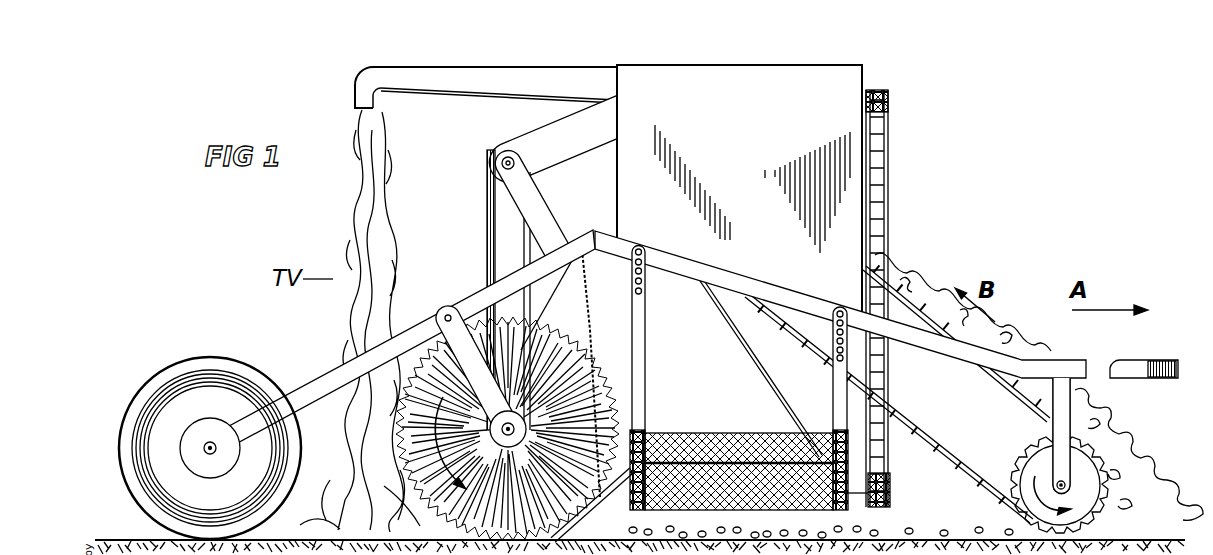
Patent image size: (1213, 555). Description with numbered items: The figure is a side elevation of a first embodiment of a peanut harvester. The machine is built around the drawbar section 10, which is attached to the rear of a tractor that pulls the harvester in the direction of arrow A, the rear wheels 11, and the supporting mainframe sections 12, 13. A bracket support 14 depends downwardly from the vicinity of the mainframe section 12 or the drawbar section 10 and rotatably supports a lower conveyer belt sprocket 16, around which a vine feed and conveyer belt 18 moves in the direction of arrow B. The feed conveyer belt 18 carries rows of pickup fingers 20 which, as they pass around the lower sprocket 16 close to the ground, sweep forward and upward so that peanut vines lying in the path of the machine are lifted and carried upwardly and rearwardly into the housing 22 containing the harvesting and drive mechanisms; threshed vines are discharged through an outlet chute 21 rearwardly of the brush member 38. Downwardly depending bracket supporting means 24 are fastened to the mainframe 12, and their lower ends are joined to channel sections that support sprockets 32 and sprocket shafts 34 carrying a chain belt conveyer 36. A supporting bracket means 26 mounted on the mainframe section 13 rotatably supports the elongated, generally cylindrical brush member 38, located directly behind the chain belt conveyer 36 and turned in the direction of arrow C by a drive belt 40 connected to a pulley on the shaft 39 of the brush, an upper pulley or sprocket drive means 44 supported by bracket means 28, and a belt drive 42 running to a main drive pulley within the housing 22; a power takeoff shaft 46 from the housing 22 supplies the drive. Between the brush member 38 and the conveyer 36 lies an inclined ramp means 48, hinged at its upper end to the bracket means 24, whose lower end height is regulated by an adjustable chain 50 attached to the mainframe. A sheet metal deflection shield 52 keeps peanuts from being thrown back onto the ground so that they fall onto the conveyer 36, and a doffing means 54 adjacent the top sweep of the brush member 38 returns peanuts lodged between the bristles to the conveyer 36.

The drawbar section 10 is at (1125, 360).
The rear wheels 11 is at (208, 357).
The supporting mainframe section 12 is at (928, 347).
The supporting mainframe section 13 is at (412, 323).
The bracket support 14 is at (1070, 407).
The lower conveyer belt sprocket 16 is at (1085, 462).
The vine feed and conveyer belt 18 is at (1000, 378).
The pickup fingers 20 is at (923, 327).
The outlet chute 21 is at (501, 88).
The housing 22 is at (771, 150).
The bracket supporting means 24 is at (650, 330).
The supporting bracket means 26 is at (452, 314).
The bracket means 28 is at (542, 207).
The sprockets 32 is at (645, 433).
The sprocket shafts 34 is at (745, 465).
The chain belt conveyer 36 is at (740, 425).
The brush member 38 is at (405, 470).
The shaft 39 is at (590, 322).
The drive belt 40 is at (485, 224).
The belt drive 42 is at (574, 117).
The pulley or sprocket drive means 44 is at (495, 163).
The power takeoff shaft 46 is at (872, 105).
The inclined ramp means 48 is at (607, 512).
The adjustable chain 50 is at (588, 275).
The sheet metal deflection shield 52 is at (730, 332).
The doffing means 54 is at (549, 296).